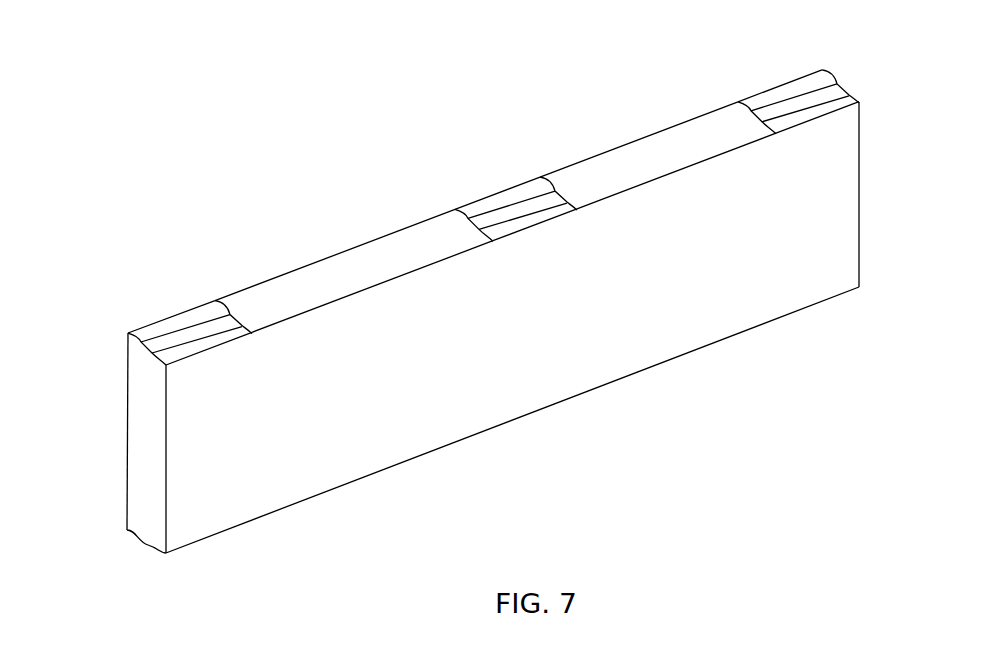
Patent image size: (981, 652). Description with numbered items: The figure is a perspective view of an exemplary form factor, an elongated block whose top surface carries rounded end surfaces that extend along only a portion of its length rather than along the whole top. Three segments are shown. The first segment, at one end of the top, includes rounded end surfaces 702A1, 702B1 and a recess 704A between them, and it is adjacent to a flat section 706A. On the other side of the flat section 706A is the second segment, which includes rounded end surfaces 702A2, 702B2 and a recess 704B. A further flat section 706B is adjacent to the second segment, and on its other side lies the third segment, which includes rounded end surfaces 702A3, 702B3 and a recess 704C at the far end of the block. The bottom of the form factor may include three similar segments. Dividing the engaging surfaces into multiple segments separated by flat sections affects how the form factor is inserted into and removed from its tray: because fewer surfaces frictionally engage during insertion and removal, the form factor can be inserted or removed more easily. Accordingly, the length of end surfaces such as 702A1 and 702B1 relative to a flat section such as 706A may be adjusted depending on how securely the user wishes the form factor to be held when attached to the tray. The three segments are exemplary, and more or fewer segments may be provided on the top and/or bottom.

The rounded end surface 702A1 is at (150, 333).
The recess 704A is at (202, 323).
The rounded end surface 702B1 is at (228, 337).
The flat section 706A is at (360, 267).
The rounded end surface 702A2 is at (483, 207).
The recess 704B is at (537, 207).
The rounded end surface 702B2 is at (570, 210).
The flat section 706B is at (661, 148).
The rounded end surface 702A3 is at (758, 90).
The recess 704C is at (813, 83).
The rounded end surface 702B3 is at (842, 100).